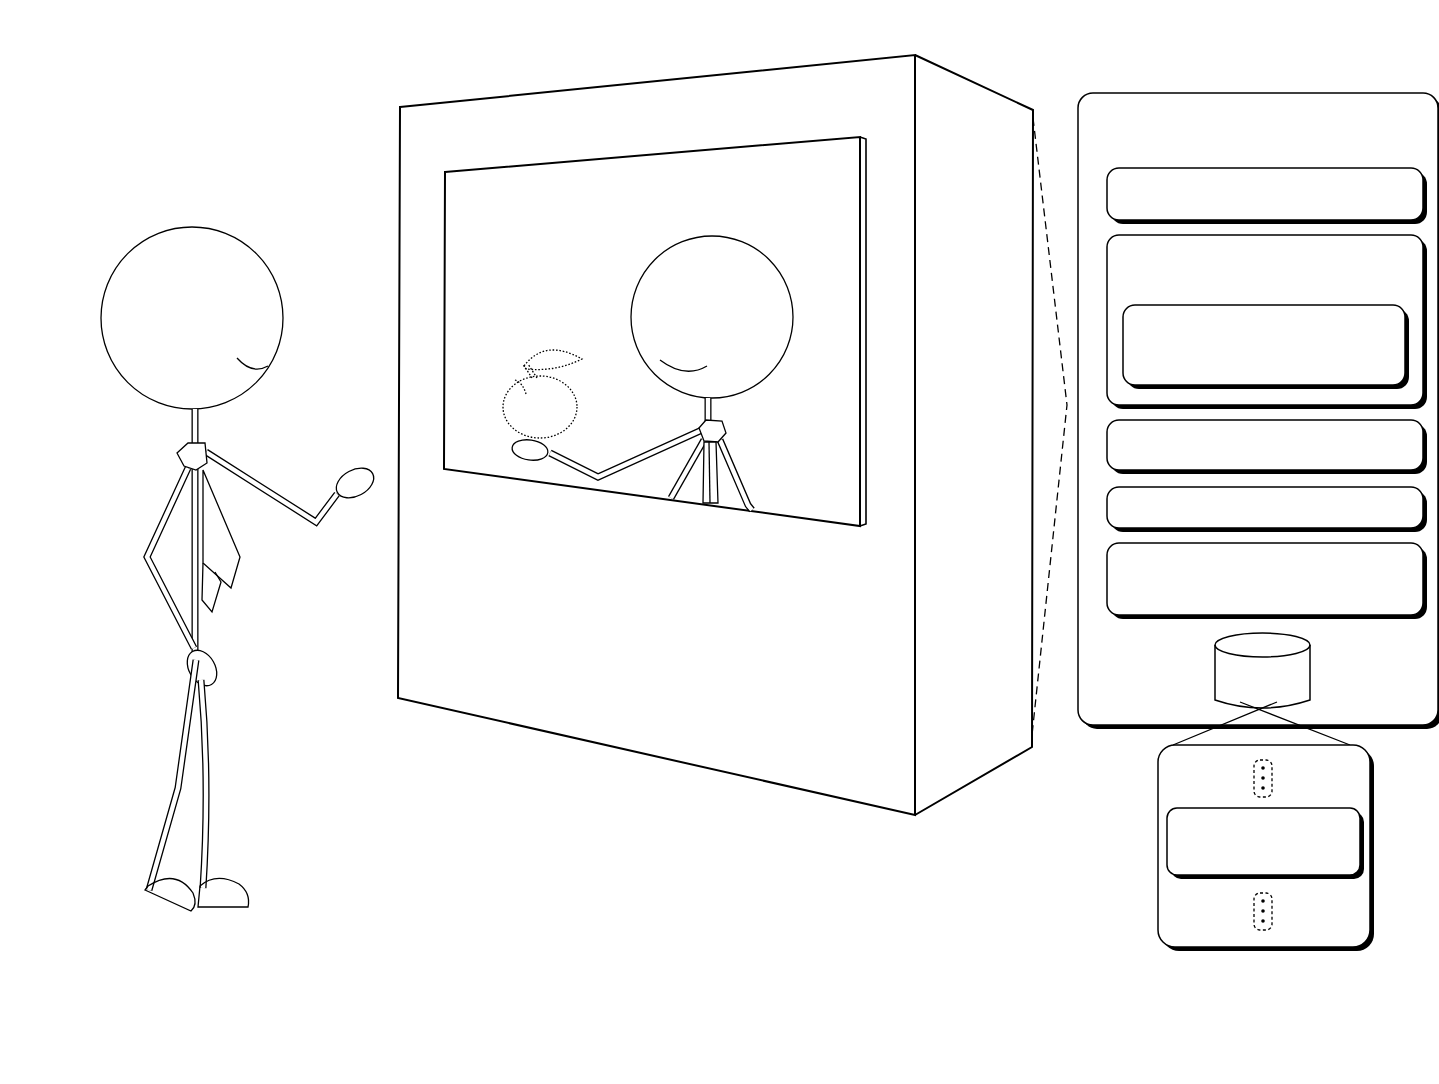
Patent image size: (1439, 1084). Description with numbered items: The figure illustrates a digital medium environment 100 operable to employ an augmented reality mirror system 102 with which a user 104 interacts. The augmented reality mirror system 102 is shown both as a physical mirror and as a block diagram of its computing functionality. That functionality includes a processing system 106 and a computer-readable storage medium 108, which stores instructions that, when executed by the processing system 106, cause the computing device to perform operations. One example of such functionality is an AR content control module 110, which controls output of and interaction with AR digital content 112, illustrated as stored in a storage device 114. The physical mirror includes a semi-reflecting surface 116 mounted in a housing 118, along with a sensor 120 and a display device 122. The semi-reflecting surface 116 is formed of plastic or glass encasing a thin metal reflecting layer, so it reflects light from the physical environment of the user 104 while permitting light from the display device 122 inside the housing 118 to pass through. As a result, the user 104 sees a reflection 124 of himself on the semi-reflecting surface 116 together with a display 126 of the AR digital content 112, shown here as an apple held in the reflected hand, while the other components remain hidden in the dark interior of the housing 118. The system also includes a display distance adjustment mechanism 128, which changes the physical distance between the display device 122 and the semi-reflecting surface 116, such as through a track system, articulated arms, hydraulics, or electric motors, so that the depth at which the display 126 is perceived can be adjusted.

The digital medium environment 100 is at (199, 127).
The augmented reality mirror system 102 is at (1357, 153).
The user 104 is at (277, 602).
The processing system 106 is at (1383, 203).
The computer-readable storage medium 108 is at (1325, 295).
The AR content control module 110 is at (1323, 368).
The AR digital content 112 is at (1325, 866).
The storage device 114 is at (1282, 688).
The semi-reflecting surface 116 is at (633, 163).
The housing 118 is at (400, 150).
The sensor 120 is at (1322, 456).
The display device 122 is at (1362, 518).
The reflection 124 is at (657, 262).
The display of the AR digital content 126 is at (521, 380).
The display distance adjustment mechanism 128 is at (1343, 603).